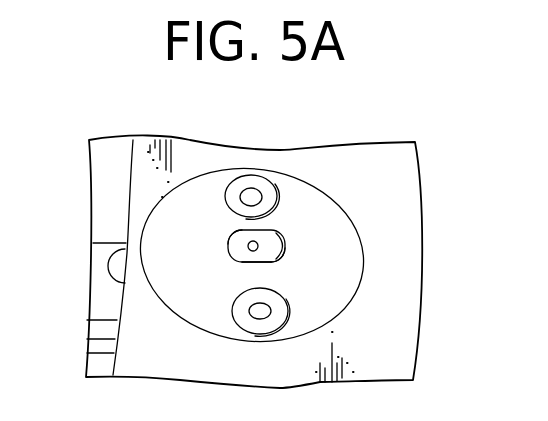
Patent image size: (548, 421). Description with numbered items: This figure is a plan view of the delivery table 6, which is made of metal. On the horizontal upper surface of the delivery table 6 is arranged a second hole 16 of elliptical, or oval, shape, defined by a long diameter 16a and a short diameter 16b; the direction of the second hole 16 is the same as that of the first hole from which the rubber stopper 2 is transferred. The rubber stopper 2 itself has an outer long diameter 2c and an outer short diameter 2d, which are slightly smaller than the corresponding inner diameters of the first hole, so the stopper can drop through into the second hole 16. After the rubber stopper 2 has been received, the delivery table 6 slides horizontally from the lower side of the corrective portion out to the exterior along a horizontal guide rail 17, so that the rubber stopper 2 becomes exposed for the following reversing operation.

The delivery table 6 is at (466, 181).
The horizontal guide rail 17 is at (105, 300).
The second hole 16 is at (278, 230).
The long diameter 16a is at (287, 247).
The short diameter 16b is at (278, 258).
The rubber stopper 2 is at (270, 240).
The long diameter 2c is at (233, 246).
The short diameter 2d is at (247, 261).